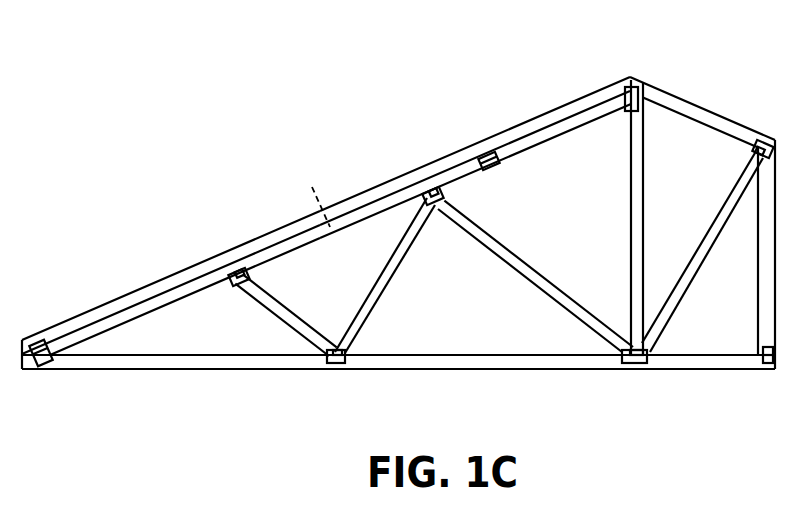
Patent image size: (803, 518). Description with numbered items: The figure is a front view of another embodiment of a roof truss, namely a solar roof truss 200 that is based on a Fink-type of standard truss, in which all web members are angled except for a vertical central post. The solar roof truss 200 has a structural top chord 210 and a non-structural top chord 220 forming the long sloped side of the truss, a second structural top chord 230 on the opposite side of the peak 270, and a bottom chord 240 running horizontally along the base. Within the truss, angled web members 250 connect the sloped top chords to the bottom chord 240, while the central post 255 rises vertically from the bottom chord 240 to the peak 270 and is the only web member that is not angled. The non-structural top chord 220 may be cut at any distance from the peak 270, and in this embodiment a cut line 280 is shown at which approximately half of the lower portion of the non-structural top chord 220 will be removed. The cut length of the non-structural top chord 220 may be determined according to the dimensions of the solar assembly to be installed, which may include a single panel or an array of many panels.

The solar roof truss 200 is at (243, 147).
The structural top chord 210 is at (102, 328).
The non-structural top chord 220 is at (548, 123).
The second structural top chord 230 is at (705, 115).
The bottom chord 240 is at (443, 362).
The web members 250 is at (290, 315).
The central post 255 is at (637, 265).
The peak 270 is at (633, 69).
The cut line 280 is at (320, 198).